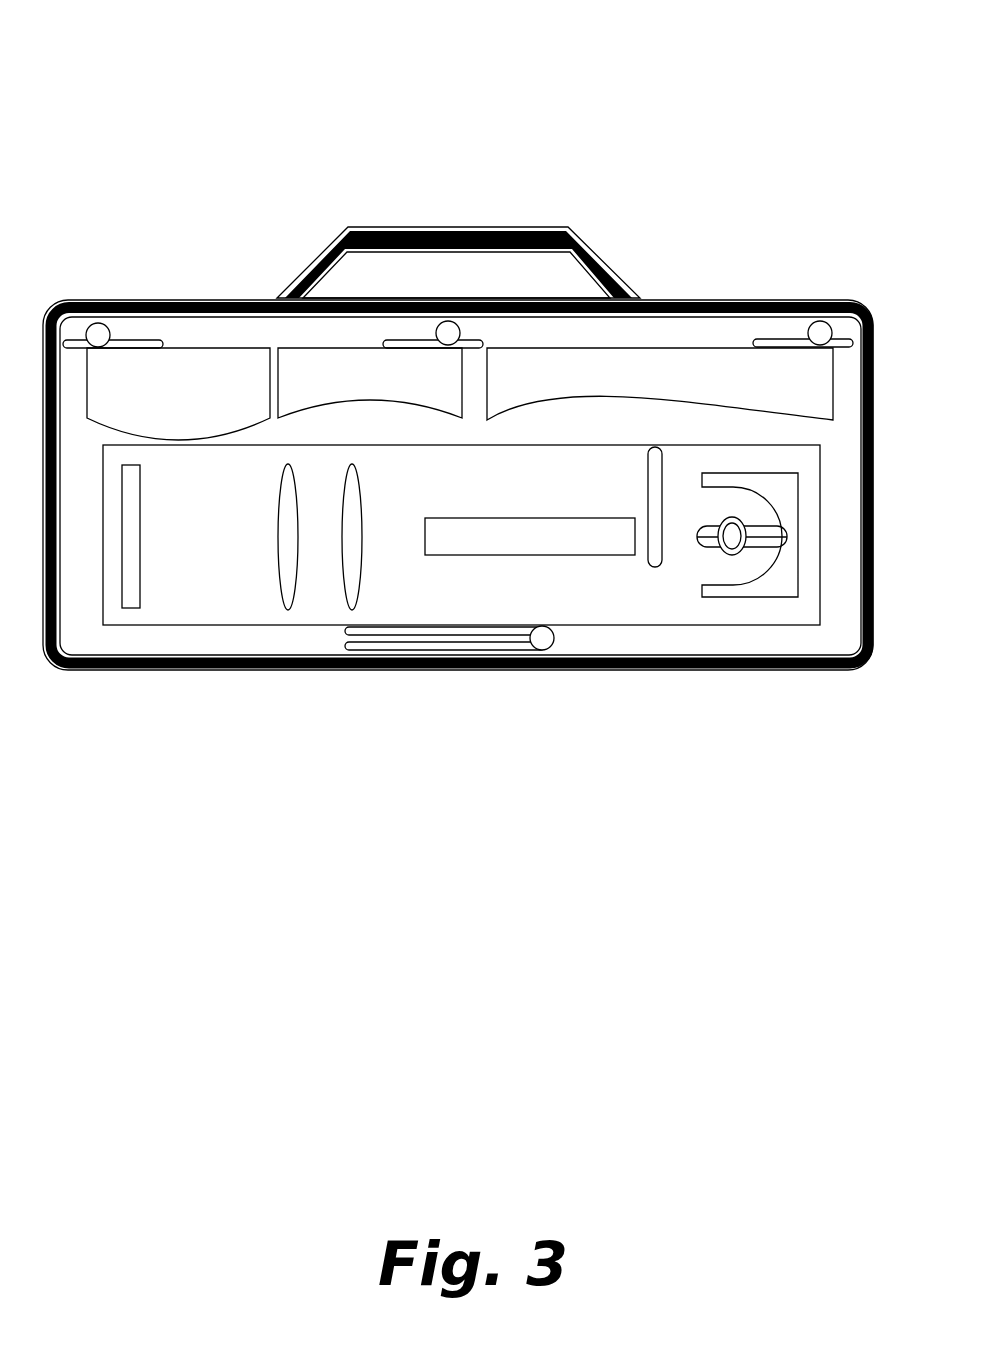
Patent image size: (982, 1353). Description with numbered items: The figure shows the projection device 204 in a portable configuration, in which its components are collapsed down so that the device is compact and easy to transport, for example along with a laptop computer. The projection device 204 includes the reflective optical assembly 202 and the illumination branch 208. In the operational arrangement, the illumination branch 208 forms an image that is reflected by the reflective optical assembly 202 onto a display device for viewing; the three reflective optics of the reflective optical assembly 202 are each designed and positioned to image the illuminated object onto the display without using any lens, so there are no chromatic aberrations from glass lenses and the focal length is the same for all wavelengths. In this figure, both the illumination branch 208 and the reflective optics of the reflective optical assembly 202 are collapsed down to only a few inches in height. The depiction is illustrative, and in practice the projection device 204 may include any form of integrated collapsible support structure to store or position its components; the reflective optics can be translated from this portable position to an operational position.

The projection device 204 is at (649, 78).
The reflective optical assembly 202 is at (676, 335).
The illumination branch 208 is at (552, 488).